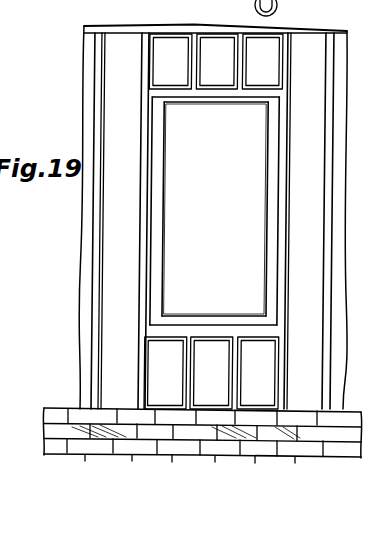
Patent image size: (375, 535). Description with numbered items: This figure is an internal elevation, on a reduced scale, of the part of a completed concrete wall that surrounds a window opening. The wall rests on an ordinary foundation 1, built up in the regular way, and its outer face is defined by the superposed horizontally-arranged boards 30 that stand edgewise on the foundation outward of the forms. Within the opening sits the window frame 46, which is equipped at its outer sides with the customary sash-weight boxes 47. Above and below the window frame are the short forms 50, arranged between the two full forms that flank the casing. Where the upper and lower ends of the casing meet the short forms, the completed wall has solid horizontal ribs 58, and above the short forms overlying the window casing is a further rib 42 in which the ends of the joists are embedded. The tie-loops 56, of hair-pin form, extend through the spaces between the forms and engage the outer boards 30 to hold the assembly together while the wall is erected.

The foundation 1 is at (61, 418).
The boards 30 is at (184, 0).
The rib 42 is at (113, 31).
The window frame 46 is at (222, 98).
The sash-weight boxes 47 is at (153, 233).
The short forms 50 is at (0, 343).
The tie-loops 56 is at (295, 0).
The horizontal ribs 58 is at (237, 92).